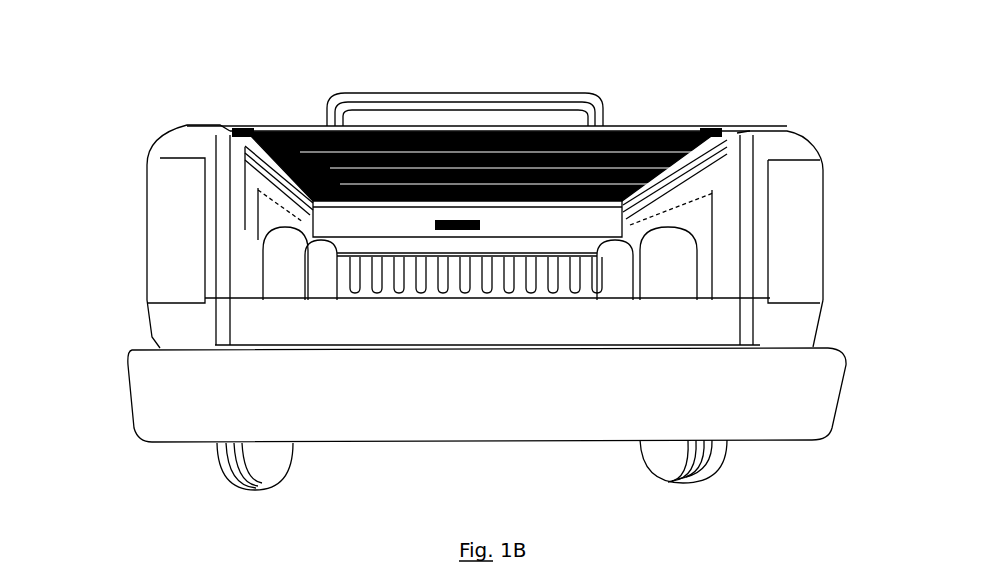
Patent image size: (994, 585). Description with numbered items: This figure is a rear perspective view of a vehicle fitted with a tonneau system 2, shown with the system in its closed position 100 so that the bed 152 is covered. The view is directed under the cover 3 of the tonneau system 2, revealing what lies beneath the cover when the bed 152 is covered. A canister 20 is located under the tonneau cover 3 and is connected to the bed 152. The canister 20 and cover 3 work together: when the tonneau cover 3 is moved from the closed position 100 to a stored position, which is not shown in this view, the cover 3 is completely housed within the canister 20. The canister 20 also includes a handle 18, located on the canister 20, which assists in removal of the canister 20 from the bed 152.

The tonneau system 2 is at (224, 108).
The tonneau cover 3 is at (712, 133).
The handle 18 is at (450, 220).
The canister 20 is at (358, 221).
The closed position 100 is at (648, 106).
The bed 152 is at (485, 293).